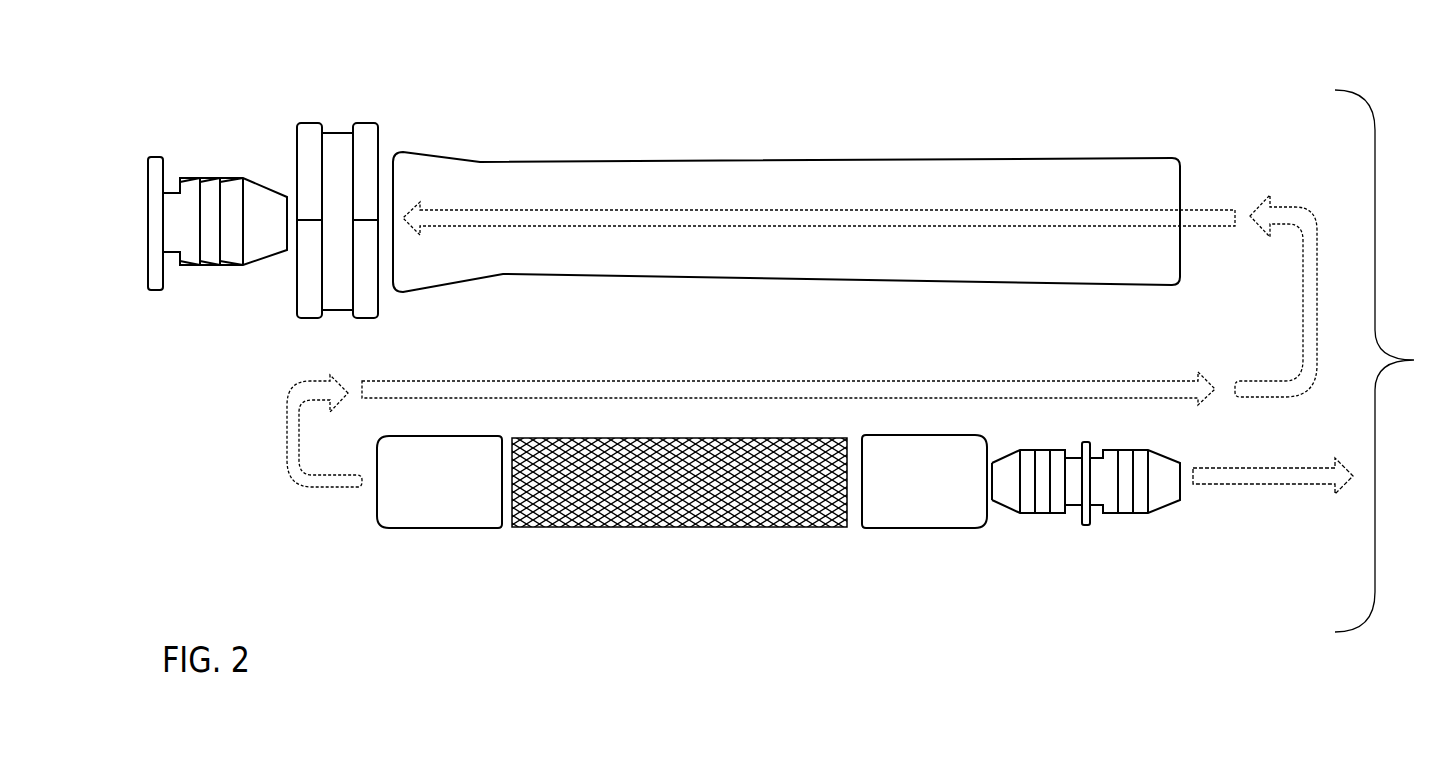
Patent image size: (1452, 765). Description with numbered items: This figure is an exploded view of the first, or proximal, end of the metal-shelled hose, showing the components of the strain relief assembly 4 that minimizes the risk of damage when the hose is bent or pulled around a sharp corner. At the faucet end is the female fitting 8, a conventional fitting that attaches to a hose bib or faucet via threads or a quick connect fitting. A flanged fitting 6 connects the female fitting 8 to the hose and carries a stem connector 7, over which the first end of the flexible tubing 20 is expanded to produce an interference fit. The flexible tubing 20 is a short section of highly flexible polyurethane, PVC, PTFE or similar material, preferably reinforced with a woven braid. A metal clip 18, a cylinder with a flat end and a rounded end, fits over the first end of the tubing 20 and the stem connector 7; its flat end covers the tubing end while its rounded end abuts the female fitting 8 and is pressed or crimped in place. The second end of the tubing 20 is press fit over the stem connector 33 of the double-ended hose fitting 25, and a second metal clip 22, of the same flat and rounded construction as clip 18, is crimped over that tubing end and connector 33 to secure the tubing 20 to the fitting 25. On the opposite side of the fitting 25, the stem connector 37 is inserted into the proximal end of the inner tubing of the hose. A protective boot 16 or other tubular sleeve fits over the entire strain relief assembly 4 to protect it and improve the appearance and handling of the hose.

The strain relief assembly 4 is at (1414, 360).
The flanged fitting 6 is at (157, 170).
The stem connector 7 is at (267, 200).
The female fitting 8 is at (317, 157).
The protective boot 16 is at (472, 172).
The metal clip 18 is at (417, 498).
The flexible tubing 20 is at (665, 498).
The metal clip 22 is at (912, 498).
The stem connector 33 is at (1012, 492).
The double-ended hose fitting 25 is at (1085, 510).
The stem connector 37 is at (1157, 492).